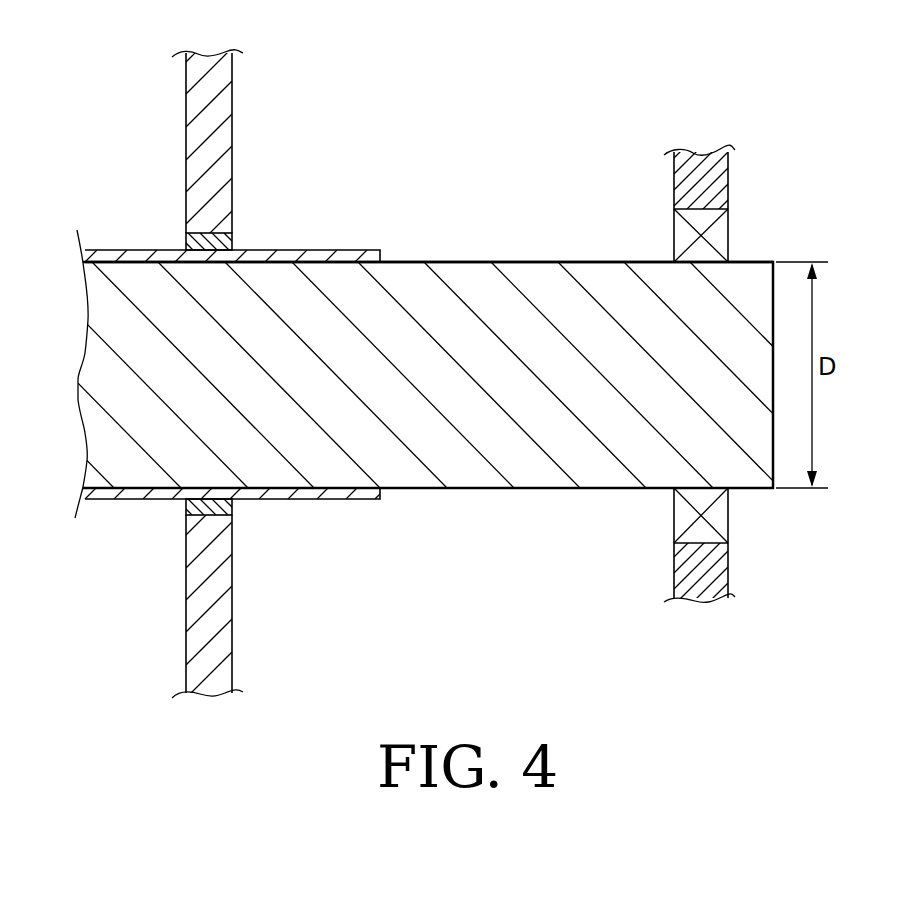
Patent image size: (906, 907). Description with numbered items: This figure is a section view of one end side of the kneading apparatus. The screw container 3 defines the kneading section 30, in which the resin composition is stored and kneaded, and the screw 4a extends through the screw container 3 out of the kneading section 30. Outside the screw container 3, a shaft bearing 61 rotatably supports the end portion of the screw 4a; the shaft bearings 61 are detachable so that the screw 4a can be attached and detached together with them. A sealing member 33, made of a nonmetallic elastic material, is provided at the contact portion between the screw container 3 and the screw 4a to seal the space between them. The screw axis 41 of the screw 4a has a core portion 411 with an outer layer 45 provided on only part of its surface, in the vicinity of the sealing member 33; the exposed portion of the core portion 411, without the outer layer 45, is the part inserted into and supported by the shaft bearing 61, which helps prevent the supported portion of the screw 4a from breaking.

The kneading section 30 is at (155, 357).
The screw container 3 is at (202, 95).
The sealing member 33 is at (212, 250).
The outer layer 45 is at (304, 257).
The screw 4a is at (540, 234).
The screw axis 41 is at (453, 353).
The core portion 411 is at (480, 413).
The shaft bearing 61 is at (718, 236).